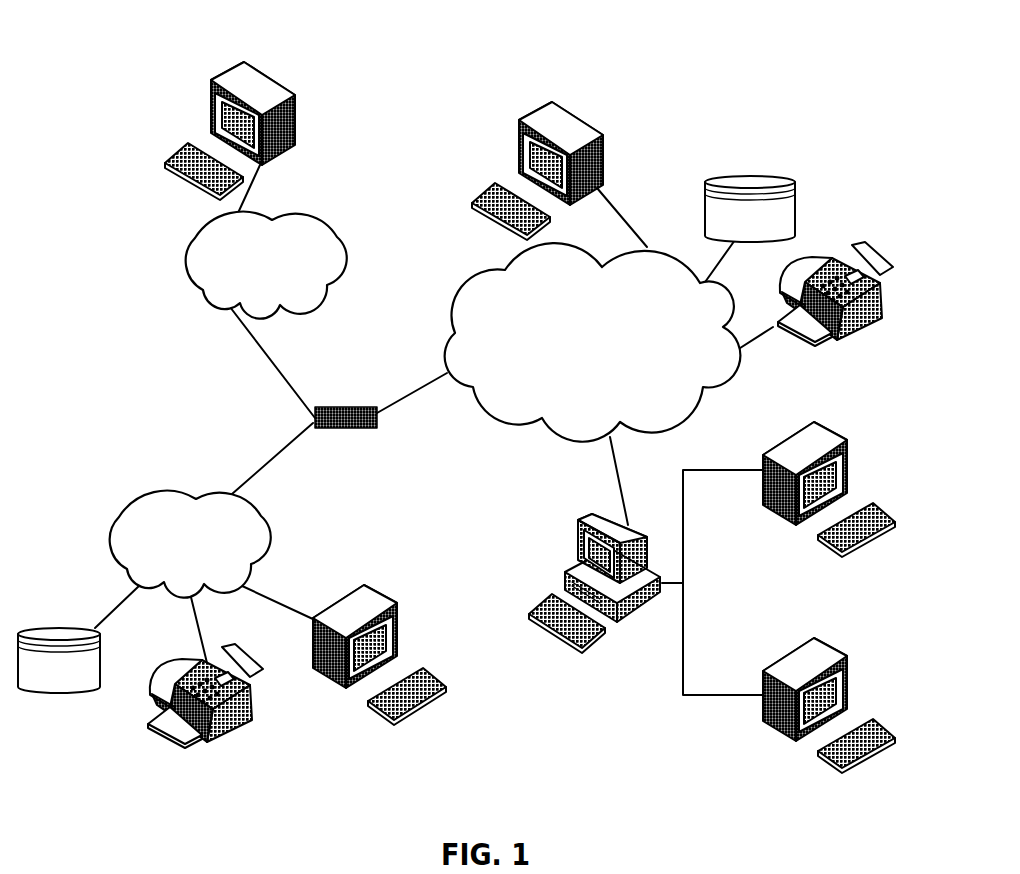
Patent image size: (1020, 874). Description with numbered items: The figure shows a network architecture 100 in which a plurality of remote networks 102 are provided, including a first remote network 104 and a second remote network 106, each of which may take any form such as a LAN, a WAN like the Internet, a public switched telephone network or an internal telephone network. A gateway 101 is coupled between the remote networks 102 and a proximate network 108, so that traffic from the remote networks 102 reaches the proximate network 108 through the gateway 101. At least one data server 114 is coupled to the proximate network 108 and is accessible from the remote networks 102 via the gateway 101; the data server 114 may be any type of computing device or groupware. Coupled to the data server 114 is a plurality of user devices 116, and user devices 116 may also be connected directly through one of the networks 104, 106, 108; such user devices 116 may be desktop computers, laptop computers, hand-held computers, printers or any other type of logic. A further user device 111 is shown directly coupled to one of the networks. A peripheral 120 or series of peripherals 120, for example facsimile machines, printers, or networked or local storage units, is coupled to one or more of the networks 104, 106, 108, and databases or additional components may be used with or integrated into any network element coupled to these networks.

The architecture 100 is at (150, 47).
The gateway 101 is at (327, 406).
The remote networks 102 is at (178, 322).
The first remote network 104 is at (115, 514).
The second remote network 106 is at (337, 236).
The proximate network 108 is at (698, 408).
The user device 111 is at (605, 135).
The data server 114 is at (578, 537).
The user devices 116 is at (297, 101).
The peripheral 120 is at (792, 185).